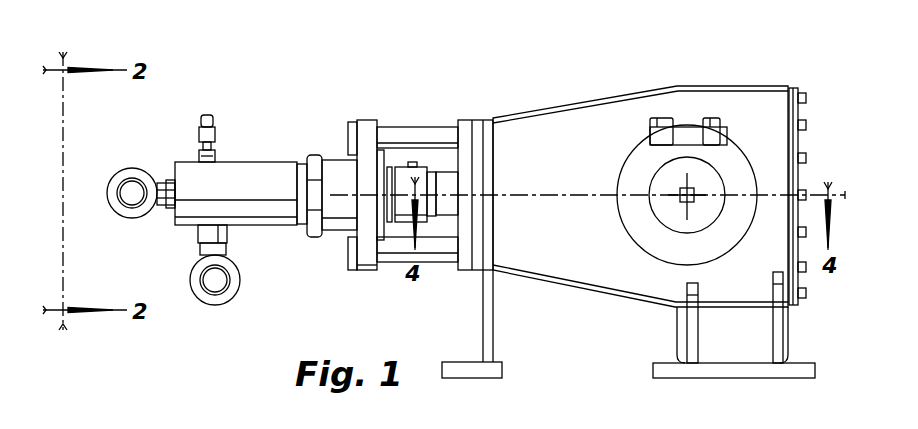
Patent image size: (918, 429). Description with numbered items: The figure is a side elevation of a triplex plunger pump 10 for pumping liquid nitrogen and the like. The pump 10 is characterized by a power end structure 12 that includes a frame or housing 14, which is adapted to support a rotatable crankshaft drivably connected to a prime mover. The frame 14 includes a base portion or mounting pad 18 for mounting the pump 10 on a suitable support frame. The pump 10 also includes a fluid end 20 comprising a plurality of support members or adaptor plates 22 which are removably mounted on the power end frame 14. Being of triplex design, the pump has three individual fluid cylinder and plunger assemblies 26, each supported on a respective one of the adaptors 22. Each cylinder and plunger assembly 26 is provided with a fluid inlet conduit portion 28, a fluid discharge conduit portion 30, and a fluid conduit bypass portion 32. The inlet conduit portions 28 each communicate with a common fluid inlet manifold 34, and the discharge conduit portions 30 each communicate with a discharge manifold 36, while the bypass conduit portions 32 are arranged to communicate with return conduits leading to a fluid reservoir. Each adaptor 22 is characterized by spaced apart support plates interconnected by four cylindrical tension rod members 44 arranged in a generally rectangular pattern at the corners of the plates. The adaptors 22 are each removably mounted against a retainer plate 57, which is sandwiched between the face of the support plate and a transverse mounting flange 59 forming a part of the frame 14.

The multi-cylinder reciprocating plunger pump 10 is at (548, 90).
The power end structure 12 is at (623, 90).
The frame or housing 14 is at (739, 90).
The base portion or mounting pad 18 is at (745, 378).
The fluid end 20 is at (366, 120).
The support members or adaptor plates 22 is at (376, 270).
The fluid cylinder and plunger assembly 26 is at (273, 225).
The fluid inlet conduit portion 28 is at (198, 235).
The fluid discharge conduit portion 30 is at (176, 182).
The fluid conduit bypass portion 32 is at (215, 133).
The fluid inlet manifold 34 is at (238, 285).
The discharge manifold 36 is at (132, 218).
The cylindrical tension rod members 44 is at (428, 128).
The retainer plate 57 is at (478, 272).
The transverse mounting flange 59 is at (487, 125).